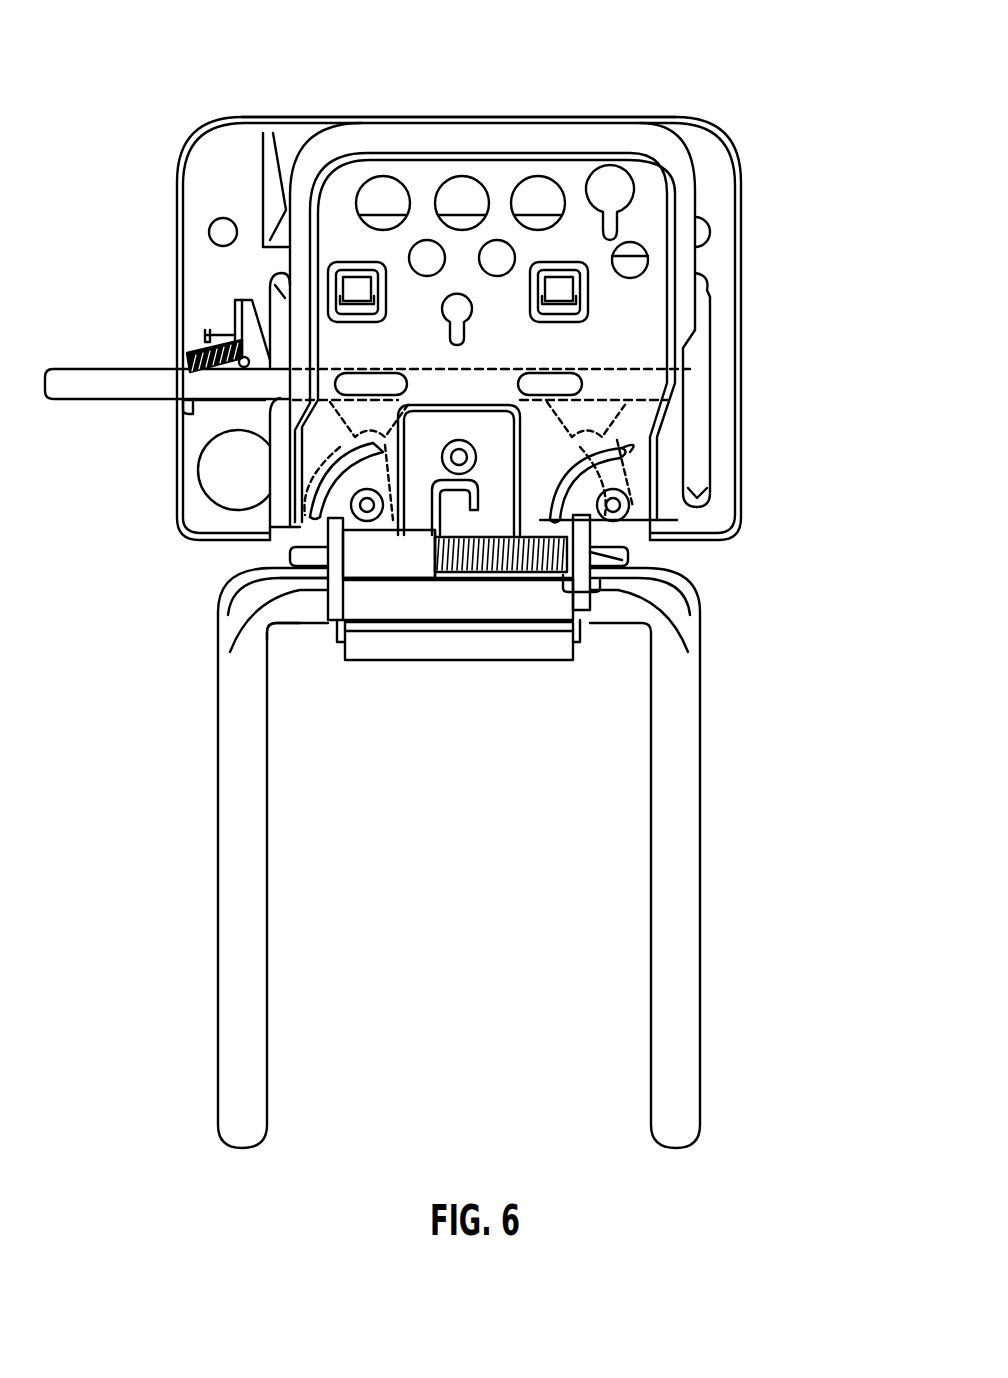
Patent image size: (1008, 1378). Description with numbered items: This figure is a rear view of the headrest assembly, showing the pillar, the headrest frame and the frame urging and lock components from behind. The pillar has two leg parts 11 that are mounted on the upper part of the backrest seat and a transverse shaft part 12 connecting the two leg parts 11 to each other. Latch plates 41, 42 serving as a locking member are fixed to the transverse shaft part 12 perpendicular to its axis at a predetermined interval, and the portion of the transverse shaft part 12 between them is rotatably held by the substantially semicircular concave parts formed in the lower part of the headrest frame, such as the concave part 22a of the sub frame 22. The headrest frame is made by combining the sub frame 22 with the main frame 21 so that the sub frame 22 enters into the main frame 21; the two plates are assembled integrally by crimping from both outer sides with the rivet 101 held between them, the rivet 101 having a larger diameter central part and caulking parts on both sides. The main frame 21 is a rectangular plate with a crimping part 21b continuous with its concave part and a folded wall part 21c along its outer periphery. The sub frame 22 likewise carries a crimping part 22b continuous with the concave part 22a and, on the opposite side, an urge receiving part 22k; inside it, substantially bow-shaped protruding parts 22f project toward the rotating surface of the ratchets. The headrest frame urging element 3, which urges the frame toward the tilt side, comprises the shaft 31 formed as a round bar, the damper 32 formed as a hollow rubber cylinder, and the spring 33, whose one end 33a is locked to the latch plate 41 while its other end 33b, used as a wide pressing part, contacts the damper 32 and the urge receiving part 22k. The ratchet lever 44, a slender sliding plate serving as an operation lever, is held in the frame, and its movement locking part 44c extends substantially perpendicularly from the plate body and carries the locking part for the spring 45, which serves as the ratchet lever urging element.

The headrest frame urging element 3 is at (469, 651).
The leg part 11 is at (222, 790).
The transverse shaft part 12 is at (303, 612).
The main frame 21 is at (233, 118).
The crimping part 21b is at (383, 653).
The folded wall part 21c is at (323, 117).
The sub frame 22 is at (688, 157).
The substantially semicircular concave part 22a is at (371, 607).
The crimping part 22b is at (417, 630).
The substantially bow-shaped protruding part 22f is at (622, 452).
The urge receiving part 22k is at (472, 515).
The shaft 31 is at (287, 553).
The damper 32 is at (330, 585).
The spring 33 is at (560, 560).
The one end 33a is at (600, 588).
The other end 33b is at (420, 535).
The latch plate 41 is at (622, 553).
The latch plate 42 is at (270, 580).
The ratchet lever 44 is at (90, 402).
The movement locking part 44c is at (230, 336).
The spring 45 is at (187, 353).
The rivet 101 is at (603, 505).